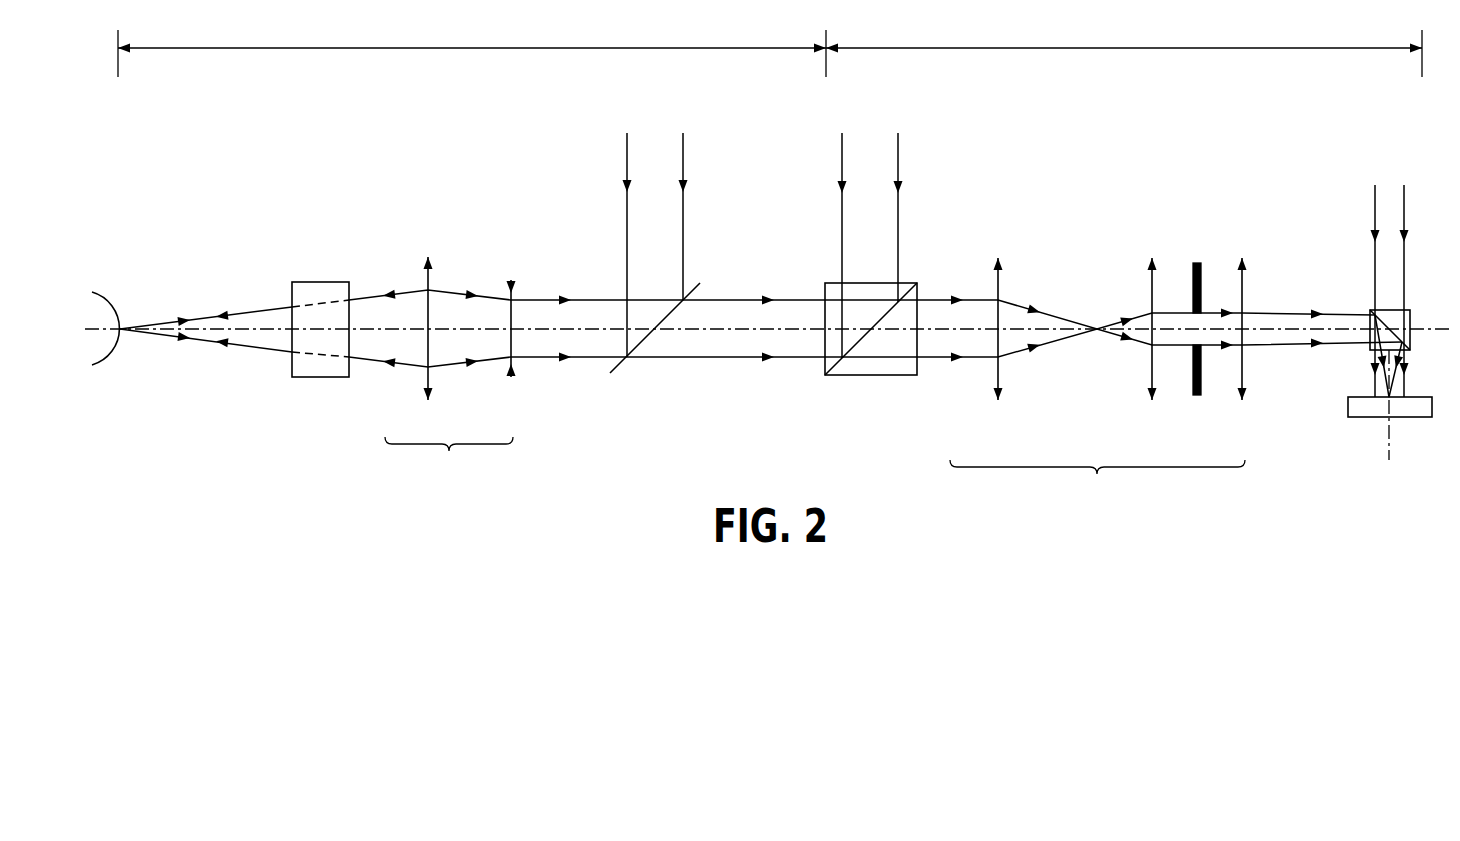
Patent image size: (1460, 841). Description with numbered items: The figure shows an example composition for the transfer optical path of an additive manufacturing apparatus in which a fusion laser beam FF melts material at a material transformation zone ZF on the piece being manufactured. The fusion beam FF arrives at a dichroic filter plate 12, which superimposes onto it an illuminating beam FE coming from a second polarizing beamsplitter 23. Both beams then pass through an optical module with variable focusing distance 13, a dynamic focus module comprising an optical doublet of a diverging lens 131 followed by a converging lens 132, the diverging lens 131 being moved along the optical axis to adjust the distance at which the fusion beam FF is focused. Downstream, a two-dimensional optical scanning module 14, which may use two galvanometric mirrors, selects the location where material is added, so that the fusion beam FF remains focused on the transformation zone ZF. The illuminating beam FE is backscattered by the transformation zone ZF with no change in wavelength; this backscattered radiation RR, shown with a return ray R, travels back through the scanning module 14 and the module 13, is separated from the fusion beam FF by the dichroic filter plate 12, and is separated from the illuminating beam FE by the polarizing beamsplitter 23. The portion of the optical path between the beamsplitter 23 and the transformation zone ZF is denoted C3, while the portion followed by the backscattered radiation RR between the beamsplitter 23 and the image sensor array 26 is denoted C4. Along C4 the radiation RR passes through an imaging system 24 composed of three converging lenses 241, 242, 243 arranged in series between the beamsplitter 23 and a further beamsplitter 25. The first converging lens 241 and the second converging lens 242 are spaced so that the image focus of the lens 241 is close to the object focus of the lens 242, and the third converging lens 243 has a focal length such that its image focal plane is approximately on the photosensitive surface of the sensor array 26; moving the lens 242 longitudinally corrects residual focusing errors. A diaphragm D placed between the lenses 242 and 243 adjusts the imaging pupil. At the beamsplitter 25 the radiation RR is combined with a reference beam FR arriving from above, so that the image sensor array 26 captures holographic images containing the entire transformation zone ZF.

The material transformation zone ZF is at (105, 366).
The backscattered radiation RR is at (187, 339).
The return beam R is at (769, 358).
The illuminating beam FE is at (222, 340).
The fusion laser beam FF is at (685, 190).
The reference beam FR is at (1372, 240).
The two-dimensional optical scanning module 14 is at (322, 378).
The converging lens 132 is at (427, 340).
The diverging lens 131 is at (510, 340).
The optical module with variable focusing distance 13 is at (449, 460).
The dichroic filter plate 12 is at (618, 368).
The second polarizing beamsplitter 23 is at (855, 376).
The first converging lens 241 is at (997, 365).
The second converging lens 242 is at (1150, 363).
The third converging lens 243 is at (1240, 363).
The imaging system 24 is at (1097, 482).
The diaphragm D is at (1194, 280).
The beamsplitter 25 is at (1369, 310).
The image sensor array 26 is at (1367, 418).
The optical path portion C3 is at (472, 50).
The optical path portion C4 is at (1124, 50).